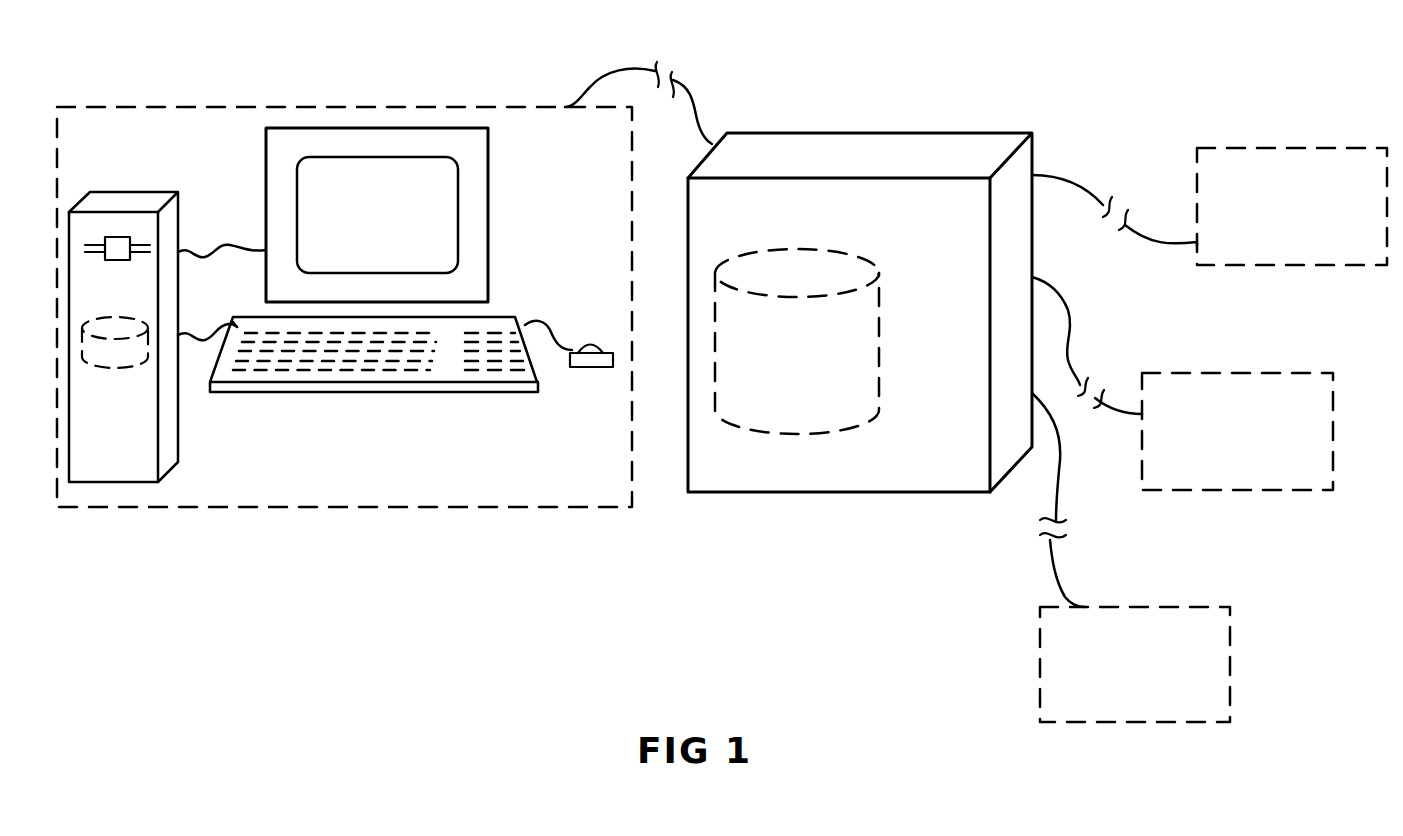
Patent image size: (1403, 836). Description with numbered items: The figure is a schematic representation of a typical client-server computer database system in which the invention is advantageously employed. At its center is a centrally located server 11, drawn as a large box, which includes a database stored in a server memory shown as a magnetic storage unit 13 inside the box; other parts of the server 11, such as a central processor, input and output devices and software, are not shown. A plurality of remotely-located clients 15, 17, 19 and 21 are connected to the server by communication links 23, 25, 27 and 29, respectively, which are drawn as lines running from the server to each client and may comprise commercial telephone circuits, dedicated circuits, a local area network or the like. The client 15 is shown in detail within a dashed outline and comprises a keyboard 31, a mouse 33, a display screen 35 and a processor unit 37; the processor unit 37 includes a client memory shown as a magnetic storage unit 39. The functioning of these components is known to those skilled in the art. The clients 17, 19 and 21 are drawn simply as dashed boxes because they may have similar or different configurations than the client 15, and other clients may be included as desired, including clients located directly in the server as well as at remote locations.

The server 11 is at (840, 492).
The magnetic storage unit 13 is at (879, 413).
The client 15 is at (555, 508).
The client 17 is at (1335, 148).
The client 19 is at (1277, 373).
The client 21 is at (1228, 607).
The communication link 23 is at (622, 67).
The communication link 25 is at (1080, 178).
The communication link 27 is at (1068, 310).
The communication link 29 is at (1056, 494).
The keyboard 31 is at (497, 318).
The mouse 33 is at (590, 340).
The display screen 35 is at (488, 188).
The processor unit 37 is at (112, 192).
The magnetic storage unit 39 is at (120, 368).